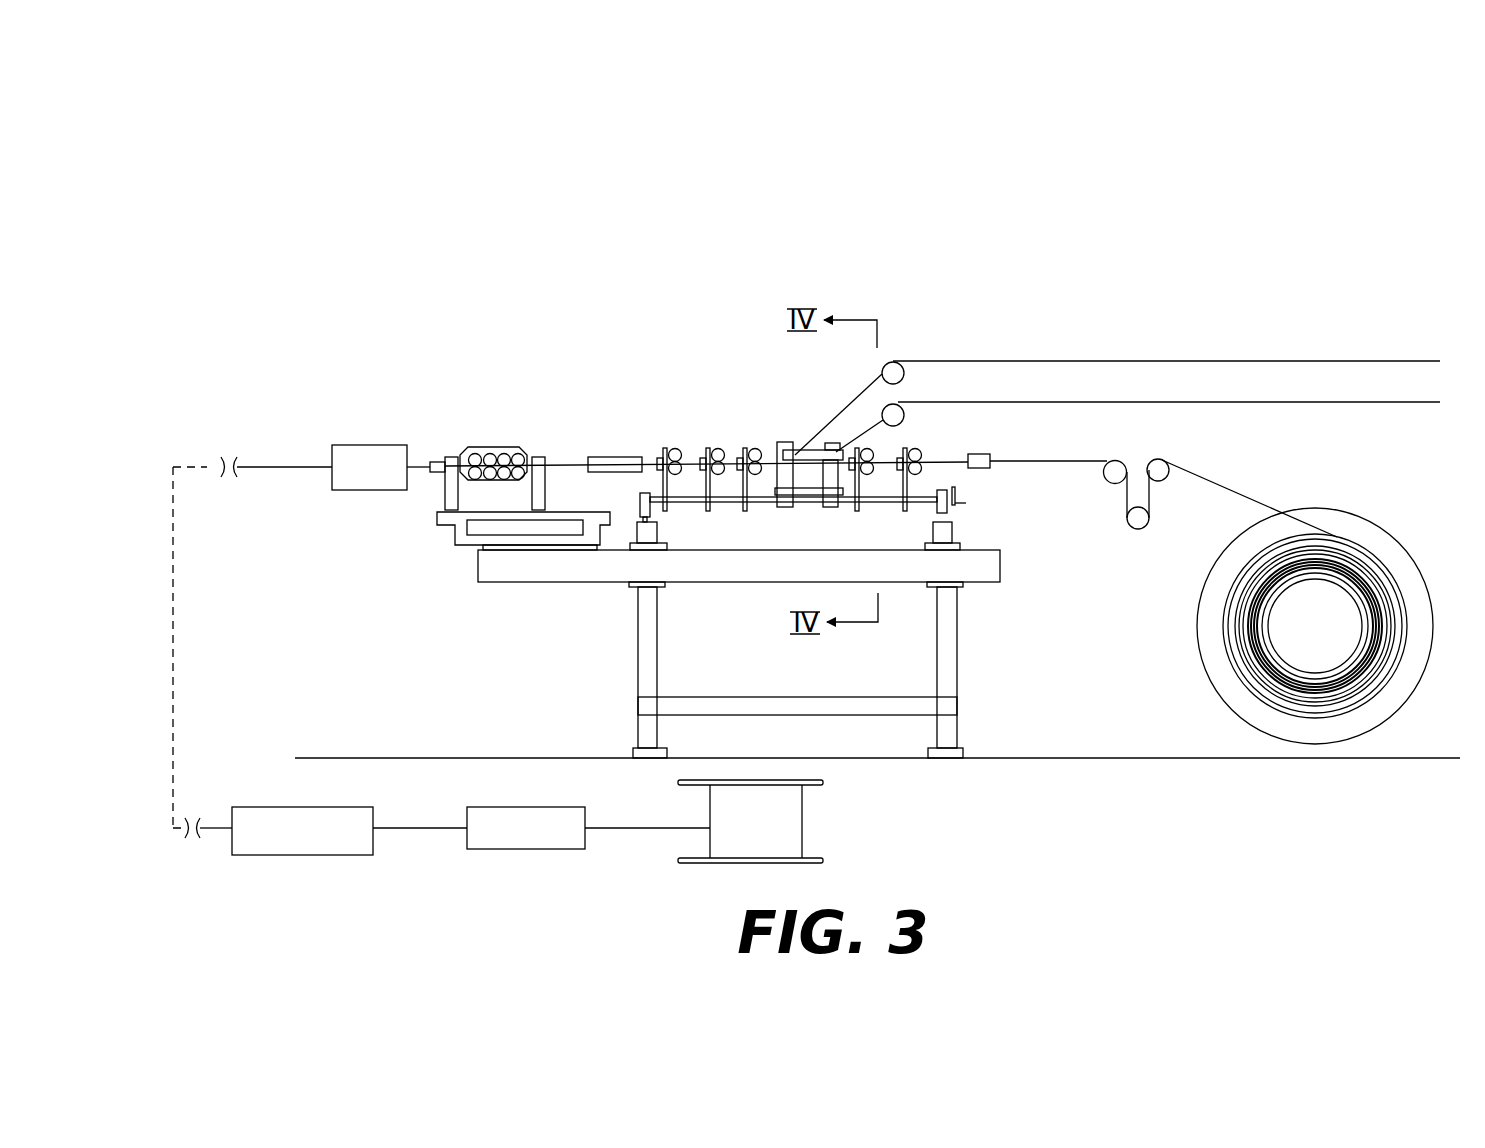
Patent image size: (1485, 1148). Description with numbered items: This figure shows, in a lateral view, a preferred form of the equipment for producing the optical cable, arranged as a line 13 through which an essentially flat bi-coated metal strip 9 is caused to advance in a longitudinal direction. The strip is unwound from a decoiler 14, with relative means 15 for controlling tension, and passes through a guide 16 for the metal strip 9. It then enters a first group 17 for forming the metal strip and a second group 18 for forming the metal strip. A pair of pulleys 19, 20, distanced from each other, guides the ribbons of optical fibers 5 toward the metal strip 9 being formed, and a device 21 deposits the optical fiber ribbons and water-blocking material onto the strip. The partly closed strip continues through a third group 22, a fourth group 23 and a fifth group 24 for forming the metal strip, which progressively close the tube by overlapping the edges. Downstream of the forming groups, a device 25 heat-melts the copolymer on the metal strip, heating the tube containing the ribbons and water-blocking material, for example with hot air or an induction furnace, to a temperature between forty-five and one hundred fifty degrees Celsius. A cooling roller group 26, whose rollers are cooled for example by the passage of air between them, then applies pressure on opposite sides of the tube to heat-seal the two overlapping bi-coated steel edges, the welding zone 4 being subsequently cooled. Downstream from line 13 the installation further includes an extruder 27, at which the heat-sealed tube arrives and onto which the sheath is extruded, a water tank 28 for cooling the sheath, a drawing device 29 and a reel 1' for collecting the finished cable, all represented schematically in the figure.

The line 13 is at (739, 452).
The extruder 27 is at (369, 457).
The cooling roller group 26 is at (483, 446).
The device for heat-melting the copolymer 25 is at (605, 457).
The fifth group for forming the metal strip 24 is at (672, 448).
The fourth group for forming the metal strip 23 is at (712, 448).
The third group for forming the metal strip 22 is at (752, 448).
The device for depositing the optical fiber ribbons and water-blocking material 21 is at (793, 425).
The second group for forming the metal strip 18 is at (865, 448).
The first group for forming the metal strip 17 is at (917, 450).
The pulley 20 is at (893, 362).
The pulley 19 is at (900, 410).
The ribbons of optical fibers 5 is at (1245, 360).
The welding zone 4 is at (1133, 402).
The guide 16 is at (987, 470).
The means for controlling tension 15 is at (1128, 530).
The metal strip 9 is at (1238, 490).
The decoiler 14 is at (1226, 650).
The water tank 28 is at (300, 843).
The drawing device 29 is at (520, 832).
The reel 1' is at (765, 821).